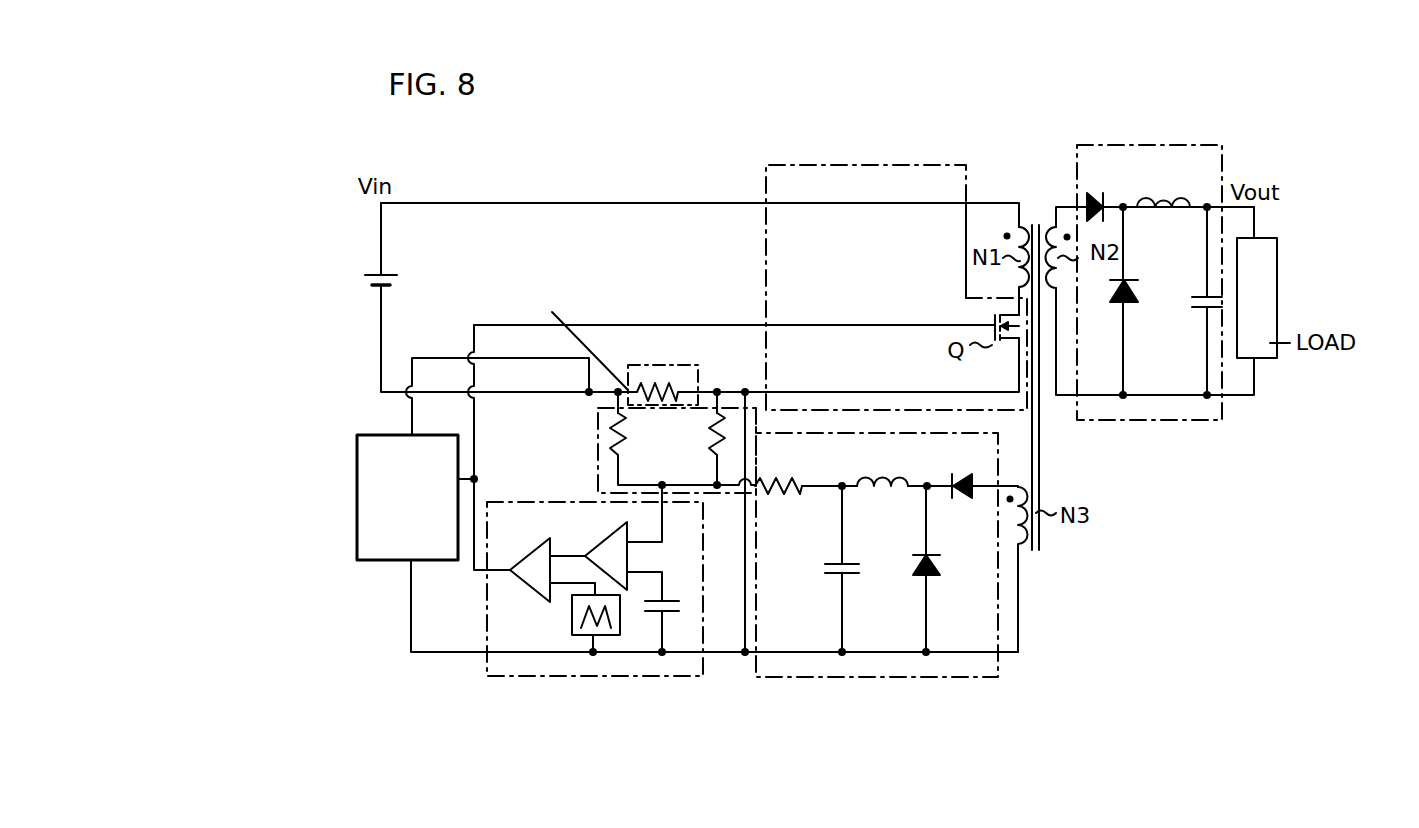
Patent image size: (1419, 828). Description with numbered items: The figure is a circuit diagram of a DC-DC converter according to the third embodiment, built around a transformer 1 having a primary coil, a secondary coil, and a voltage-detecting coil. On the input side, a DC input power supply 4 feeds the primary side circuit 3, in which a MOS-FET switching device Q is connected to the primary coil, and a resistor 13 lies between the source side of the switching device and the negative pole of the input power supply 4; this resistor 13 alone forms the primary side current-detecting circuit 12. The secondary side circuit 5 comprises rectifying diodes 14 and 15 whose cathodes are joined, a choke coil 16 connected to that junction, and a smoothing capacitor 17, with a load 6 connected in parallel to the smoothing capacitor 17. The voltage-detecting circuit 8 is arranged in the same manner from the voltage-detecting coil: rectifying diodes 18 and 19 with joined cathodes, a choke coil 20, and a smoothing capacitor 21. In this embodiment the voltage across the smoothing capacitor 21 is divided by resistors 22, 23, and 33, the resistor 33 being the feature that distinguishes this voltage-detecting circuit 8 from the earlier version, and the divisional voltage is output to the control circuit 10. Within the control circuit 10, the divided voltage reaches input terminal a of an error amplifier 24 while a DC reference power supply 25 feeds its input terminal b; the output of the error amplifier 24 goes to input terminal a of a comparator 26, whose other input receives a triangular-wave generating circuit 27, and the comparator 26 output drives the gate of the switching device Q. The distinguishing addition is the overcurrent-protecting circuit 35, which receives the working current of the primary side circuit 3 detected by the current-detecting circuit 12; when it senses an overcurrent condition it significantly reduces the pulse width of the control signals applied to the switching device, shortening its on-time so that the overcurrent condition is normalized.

The transformer 1 is at (1041, 225).
The primary side circuit 3 is at (937, 163).
The input power supply 4 is at (364, 273).
The secondary side circuit 5 is at (1120, 144).
The load 6 is at (1280, 285).
The voltage-detecting circuit 8 is at (868, 679).
The control circuit 10 is at (692, 678).
The primary side current-detecting circuit 12 is at (680, 365).
The resistor 13 is at (640, 390).
The rectifying diode 14 is at (1097, 194).
The rectifying diode 15 is at (1130, 303).
The choke coil 16 is at (1173, 194).
The smoothing capacitor 17 is at (1200, 296).
The rectifying diode 18 is at (960, 503).
The rectifying diode 19 is at (932, 582).
The choke coil 20 is at (910, 478).
The smoothing capacitor 21 is at (850, 577).
The resistor 22 is at (796, 481).
The resistor 23 is at (626, 446).
The error amplifier 24 is at (597, 543).
The reference power supply 25 is at (665, 600).
The comparator 26 is at (540, 538).
The triangular-wave generating circuit 27 is at (572, 620).
The resistor 33 is at (710, 444).
The overcurrent-protecting circuit 35 is at (356, 494).